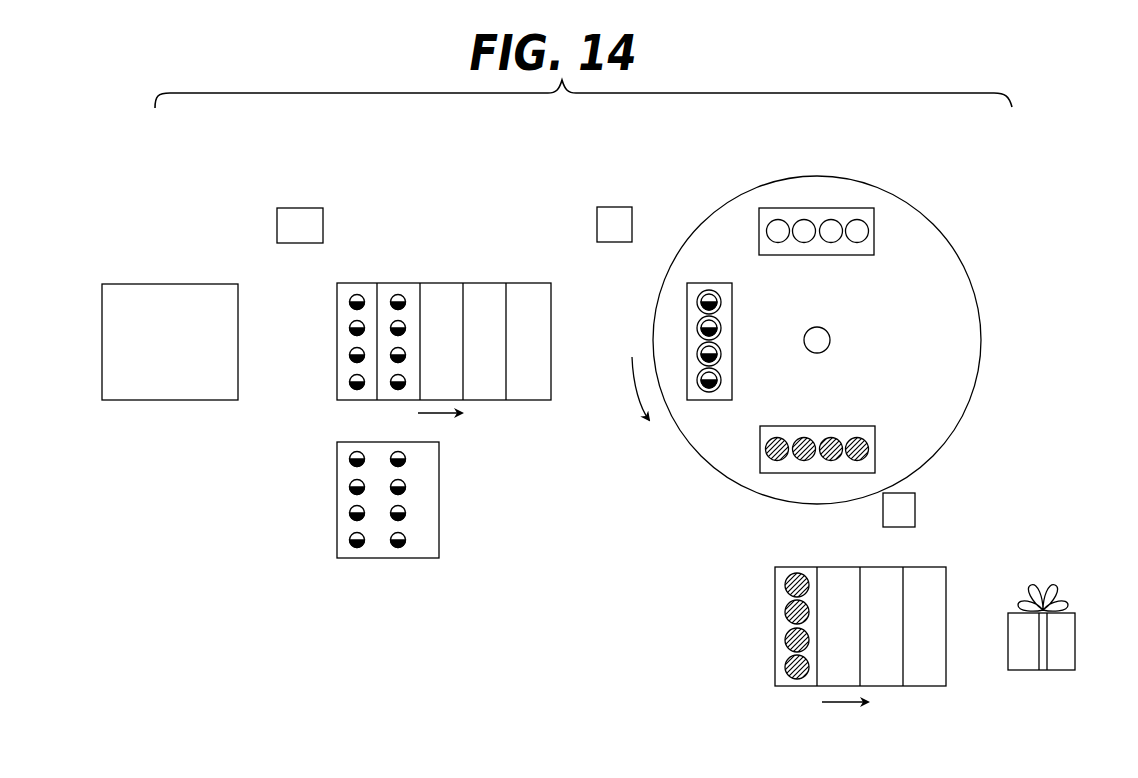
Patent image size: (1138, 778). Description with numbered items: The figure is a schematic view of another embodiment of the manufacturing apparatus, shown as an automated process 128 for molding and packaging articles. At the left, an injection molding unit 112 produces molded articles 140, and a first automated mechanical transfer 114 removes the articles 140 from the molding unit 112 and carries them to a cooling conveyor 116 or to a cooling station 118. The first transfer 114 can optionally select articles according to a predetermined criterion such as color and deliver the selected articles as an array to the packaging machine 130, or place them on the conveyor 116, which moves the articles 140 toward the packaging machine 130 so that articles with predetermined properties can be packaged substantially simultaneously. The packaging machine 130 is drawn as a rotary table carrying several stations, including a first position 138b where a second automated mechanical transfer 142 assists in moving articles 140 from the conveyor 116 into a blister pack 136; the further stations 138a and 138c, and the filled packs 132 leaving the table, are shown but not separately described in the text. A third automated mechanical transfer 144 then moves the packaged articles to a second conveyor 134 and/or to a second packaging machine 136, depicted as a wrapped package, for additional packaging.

The injection molding unit 112 is at (137, 283).
The first automated mechanical transfer 114 is at (283, 208).
The cooling conveyor 116 is at (443, 283).
The cooling station 118 is at (439, 522).
The automated process 128 is at (321, 668).
The packaging machine 130 is at (881, 159).
The filled containers 132 is at (868, 449).
The second conveyor 134 is at (883, 677).
The blister pack 136 is at (858, 229).
The first station 138a is at (821, 263).
The first position 138b is at (738, 357).
The third station 138c is at (847, 423).
The molded articles 140 is at (357, 299).
The second automated mechanical transfer 142 is at (620, 207).
The third automated mechanical transfer 144 is at (910, 511).